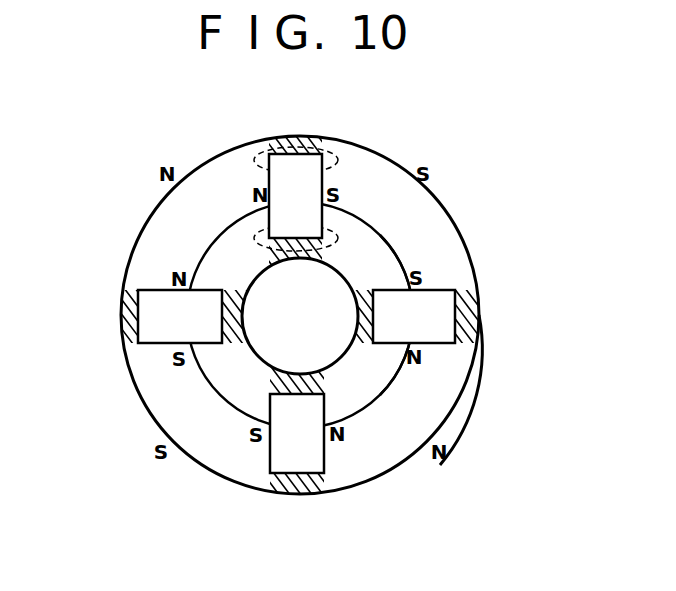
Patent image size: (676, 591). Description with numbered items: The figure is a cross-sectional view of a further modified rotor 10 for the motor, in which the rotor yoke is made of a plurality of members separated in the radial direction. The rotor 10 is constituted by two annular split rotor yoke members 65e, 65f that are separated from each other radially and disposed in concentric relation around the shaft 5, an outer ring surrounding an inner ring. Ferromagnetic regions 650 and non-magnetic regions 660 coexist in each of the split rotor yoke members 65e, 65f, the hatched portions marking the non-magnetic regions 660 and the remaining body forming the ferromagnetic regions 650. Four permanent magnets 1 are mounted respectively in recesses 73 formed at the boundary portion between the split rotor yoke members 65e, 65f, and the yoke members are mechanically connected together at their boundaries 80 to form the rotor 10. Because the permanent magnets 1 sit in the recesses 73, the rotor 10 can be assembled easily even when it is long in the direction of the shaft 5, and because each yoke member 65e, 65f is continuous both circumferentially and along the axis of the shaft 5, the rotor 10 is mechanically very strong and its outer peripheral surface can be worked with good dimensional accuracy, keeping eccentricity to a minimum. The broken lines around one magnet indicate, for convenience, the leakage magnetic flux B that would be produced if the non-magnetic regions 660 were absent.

The rotor 10 is at (399, 161).
The leakage magnetic flux B is at (336, 232).
The ferromagnetic regions 650 is at (445, 397).
The boundaries 80 is at (227, 407).
The split rotor yoke member 65e is at (428, 241).
The split rotor yoke member 65f is at (356, 380).
The shaft 5 is at (262, 345).
The non-magnetic regions 660 is at (477, 319).
The recesses 73 is at (273, 465).
The permanent magnets 1 is at (438, 297).